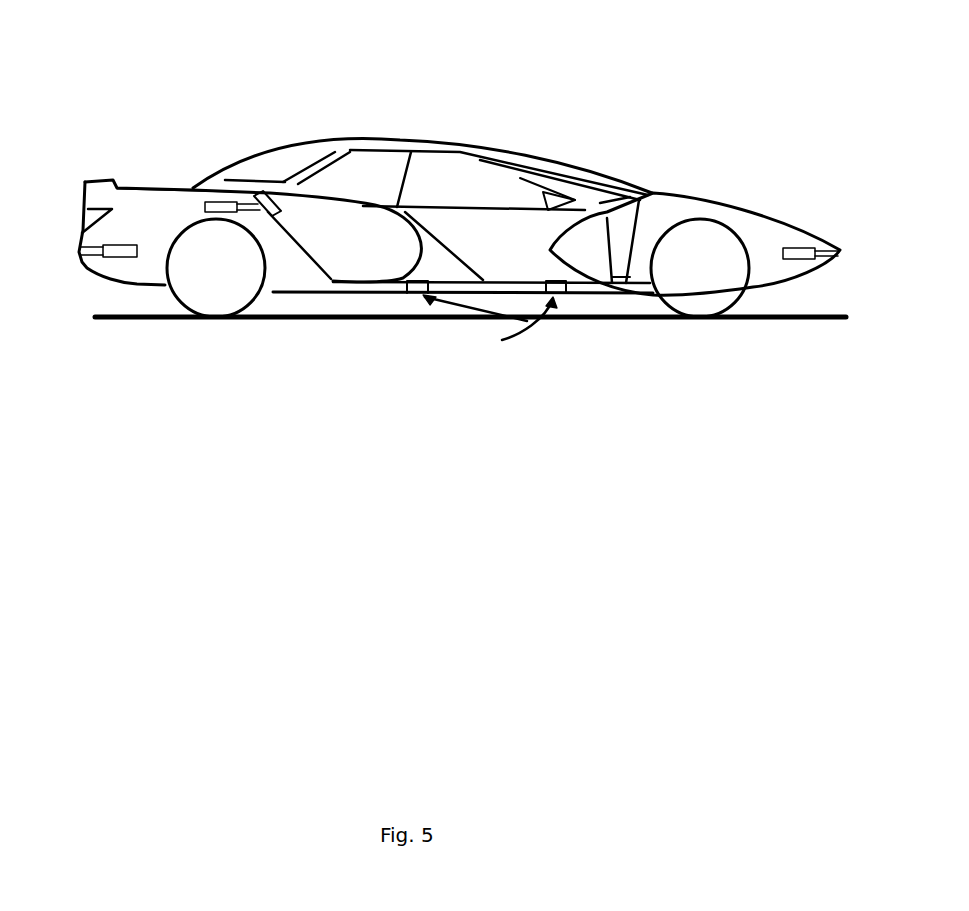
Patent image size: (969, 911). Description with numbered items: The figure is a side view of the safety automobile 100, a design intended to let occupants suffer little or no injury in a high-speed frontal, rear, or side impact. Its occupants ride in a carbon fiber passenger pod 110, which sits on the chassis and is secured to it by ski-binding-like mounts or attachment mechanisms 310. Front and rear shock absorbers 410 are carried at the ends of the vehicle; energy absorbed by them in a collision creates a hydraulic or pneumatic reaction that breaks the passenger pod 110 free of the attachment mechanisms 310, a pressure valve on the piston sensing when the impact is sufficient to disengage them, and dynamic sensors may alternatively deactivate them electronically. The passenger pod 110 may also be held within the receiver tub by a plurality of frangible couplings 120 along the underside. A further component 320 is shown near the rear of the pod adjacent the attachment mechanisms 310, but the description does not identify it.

The safety automobile 100 is at (722, 195).
The passenger pod 110 is at (513, 136).
The frangible couplings 120 is at (486, 320).
The attachment mechanisms 310 is at (193, 190).
The sensor assembly 320 is at (270, 198).
The shock absorbers 410 is at (118, 256).